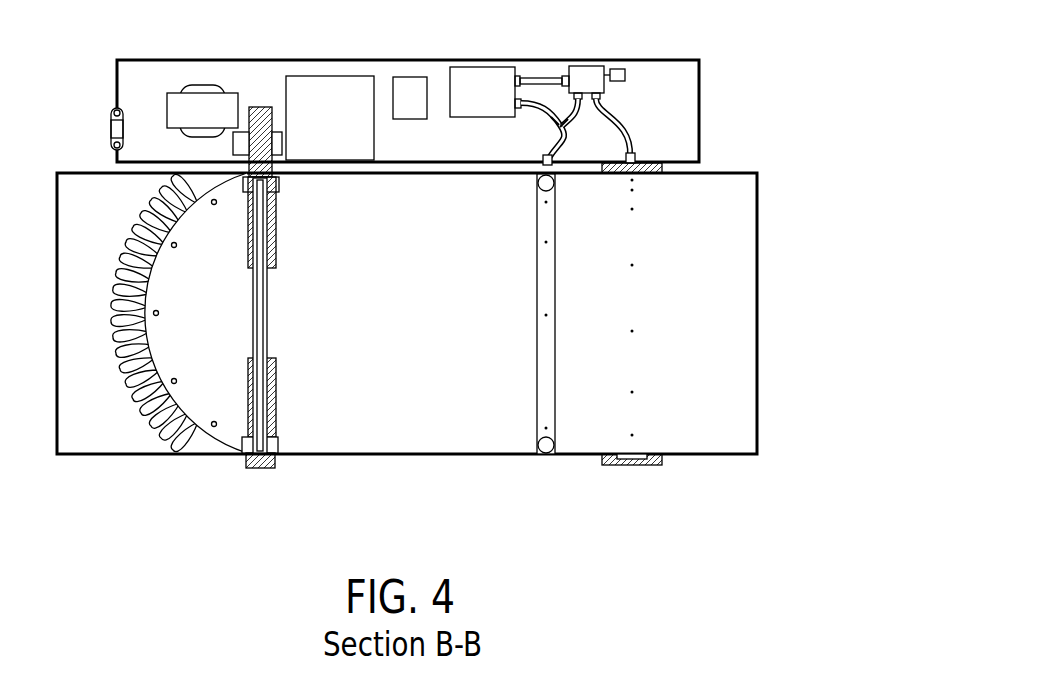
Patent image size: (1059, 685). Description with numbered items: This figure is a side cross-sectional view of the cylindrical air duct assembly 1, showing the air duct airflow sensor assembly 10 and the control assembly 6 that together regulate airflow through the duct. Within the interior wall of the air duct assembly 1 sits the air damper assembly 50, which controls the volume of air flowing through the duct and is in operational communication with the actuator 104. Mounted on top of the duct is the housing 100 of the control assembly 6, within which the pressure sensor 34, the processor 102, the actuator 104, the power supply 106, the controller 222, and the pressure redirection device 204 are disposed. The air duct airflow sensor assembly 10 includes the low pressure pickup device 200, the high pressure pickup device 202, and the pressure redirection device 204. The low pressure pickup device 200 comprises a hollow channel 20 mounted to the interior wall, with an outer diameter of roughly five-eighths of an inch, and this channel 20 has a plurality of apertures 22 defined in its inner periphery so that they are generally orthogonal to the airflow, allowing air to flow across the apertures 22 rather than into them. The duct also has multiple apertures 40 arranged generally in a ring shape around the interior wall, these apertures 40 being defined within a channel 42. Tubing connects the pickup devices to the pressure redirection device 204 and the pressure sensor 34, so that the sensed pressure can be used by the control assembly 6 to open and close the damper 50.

The air duct assembly 1 is at (78, 172).
The control assembly 6 is at (133, 60).
The air duct airflow sensor assembly 10 is at (722, 152).
The hollow channel 20 is at (537, 412).
The apertures 22 is at (545, 390).
The pressure sensor 34 is at (470, 67).
The apertures 40 is at (632, 265).
The channel 42 is at (655, 465).
The air damper assembly 50 is at (125, 355).
The housing 100 is at (672, 60).
The processor 102 is at (412, 77).
The actuator 104 is at (350, 76).
The power supply 106 is at (205, 85).
The low pressure pickup device 200 is at (530, 212).
The high pressure pickup device 202 is at (648, 193).
The pressure redirection device 204 is at (585, 66).
The controller 222 is at (616, 69).